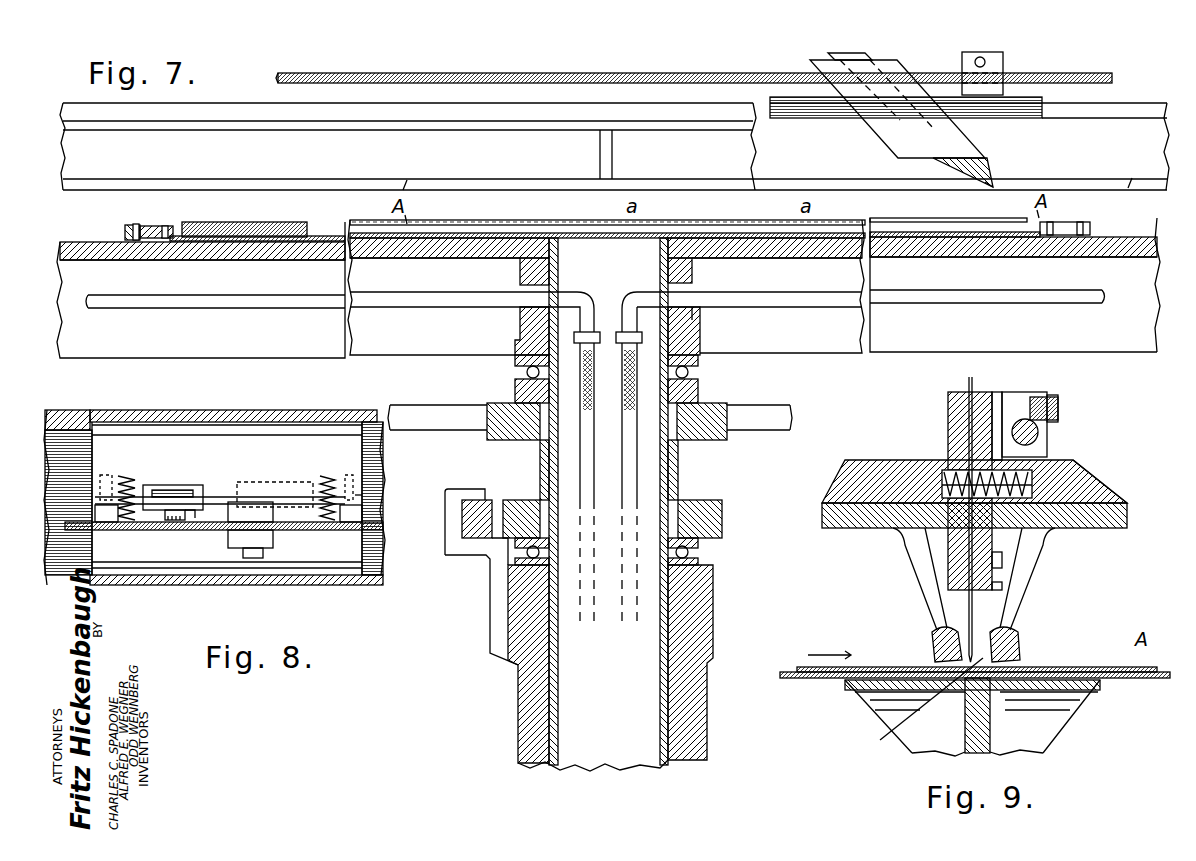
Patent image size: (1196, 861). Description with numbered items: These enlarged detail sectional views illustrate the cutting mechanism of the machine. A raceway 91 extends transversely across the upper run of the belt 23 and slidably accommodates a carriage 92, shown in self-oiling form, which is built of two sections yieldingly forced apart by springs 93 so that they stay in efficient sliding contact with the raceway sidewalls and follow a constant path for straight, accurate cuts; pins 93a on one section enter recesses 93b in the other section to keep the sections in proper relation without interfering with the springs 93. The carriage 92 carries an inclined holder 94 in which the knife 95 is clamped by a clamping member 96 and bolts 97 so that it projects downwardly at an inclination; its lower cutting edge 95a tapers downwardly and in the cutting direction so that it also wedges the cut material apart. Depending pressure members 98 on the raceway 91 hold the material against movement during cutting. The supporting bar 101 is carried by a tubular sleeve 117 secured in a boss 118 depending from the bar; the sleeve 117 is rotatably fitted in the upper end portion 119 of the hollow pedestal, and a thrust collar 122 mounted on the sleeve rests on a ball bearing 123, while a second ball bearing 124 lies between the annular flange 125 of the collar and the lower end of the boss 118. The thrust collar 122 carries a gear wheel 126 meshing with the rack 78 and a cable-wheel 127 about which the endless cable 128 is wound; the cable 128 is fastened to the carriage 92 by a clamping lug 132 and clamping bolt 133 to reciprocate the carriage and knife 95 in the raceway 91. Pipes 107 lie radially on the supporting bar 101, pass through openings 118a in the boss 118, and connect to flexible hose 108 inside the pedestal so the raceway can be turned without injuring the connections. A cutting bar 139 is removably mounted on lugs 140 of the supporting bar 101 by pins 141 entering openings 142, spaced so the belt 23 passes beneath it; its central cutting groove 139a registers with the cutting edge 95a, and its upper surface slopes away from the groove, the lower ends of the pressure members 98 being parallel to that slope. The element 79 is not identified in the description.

In FIG. 7, the belt 23 is at (472, 232).
In FIG. 9, the belt 23 is at (815, 680).
In FIG. 7, the rack 78 is at (476, 525).
In FIG. 7, the bracket block 79 is at (470, 497).
In FIG. 7, the raceway 91 is at (614, 146).
In FIG. 8, the raceway 91 is at (132, 410).
In FIG. 9, the raceway 91 is at (1075, 528).
In FIG. 7, the carriage 92 is at (1014, 118).
In FIG. 8, the carriage 92 is at (250, 440).
In FIG. 9, the carriage 92 is at (912, 461).
In FIG. 8, the springs 93 is at (134, 470).
In FIG. 9, the springs 93 is at (1032, 480).
In FIG. 8, the pins 93a is at (356, 497).
In FIG. 8, the recesses 93b is at (382, 466).
In FIG. 7, the holder 94 is at (895, 63).
In FIG. 8, the holder 94 is at (176, 480).
In FIG. 9, the holder 94 is at (948, 398).
In FIG. 7, the knife 95 is at (990, 168).
In FIG. 8, the knife 95 is at (188, 491).
In FIG. 9, the knife 95 is at (975, 383).
In FIG. 7, the cutting edge 95a is at (982, 184).
In FIG. 8, the clamping member 96 is at (192, 515).
In FIG. 9, the clamping member 96 is at (1003, 588).
In FIG. 8, the bolts 97 is at (174, 521).
In FIG. 9, the bolts 97 is at (1003, 398).
In FIG. 7, the pressure members 98 is at (775, 171).
In FIG. 9, the pressure members 98 is at (930, 642).
In FIG. 7, the supporting bar 101 is at (180, 262).
In FIG. 9, the supporting bar 101 is at (968, 727).
In FIG. 7, the pipes 107 is at (262, 287).
In FIG. 7, the flexible tubings or hose 108 is at (633, 468).
In FIG. 7, the tubular sleeve 117 is at (660, 672).
In FIG. 7, the boss 118 is at (520, 318).
In FIG. 7, the openings 118a is at (695, 313).
In FIG. 7, the upper end portion 119 is at (712, 612).
In FIG. 7, the thrust collar 122 is at (680, 470).
In FIG. 7, the ball bearing 123 is at (698, 552).
In FIG. 7, the second ball bearing 124 is at (692, 372).
In FIG. 7, the annular flange 125 is at (700, 404).
In FIG. 7, the gear wheel 126 is at (516, 505).
In FIG. 7, the cable-wheel 127 is at (765, 430).
In FIG. 7, the endless cable 128 is at (752, 73).
In FIG. 8, the endless cable 128 is at (330, 531).
In FIG. 9, the endless cable 128 is at (1040, 433).
In FIG. 7, the clamping lug 132 is at (1003, 65).
In FIG. 8, the clamping lug 132 is at (240, 540).
In FIG. 9, the clamping lug 132 is at (1047, 398).
In FIG. 7, the clamping bolt 133 is at (987, 60).
In FIG. 8, the clamping bolt 133 is at (256, 560).
In FIG. 9, the clamping bolt 133 is at (1060, 407).
In FIG. 7, the cutting bar 139 is at (278, 215).
In FIG. 9, the cutting bar 139 is at (1040, 668).
In FIG. 9, the cutting groove 139a is at (920, 713).
In FIG. 7, the lugs 140 is at (125, 238).
In FIG. 7, the pins 141 is at (160, 230).
In FIG. 7, the openings 142 is at (136, 224).